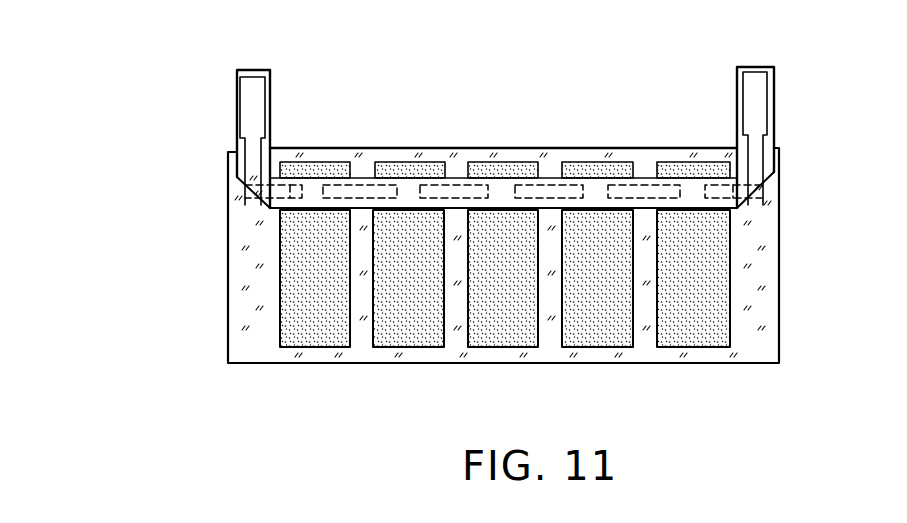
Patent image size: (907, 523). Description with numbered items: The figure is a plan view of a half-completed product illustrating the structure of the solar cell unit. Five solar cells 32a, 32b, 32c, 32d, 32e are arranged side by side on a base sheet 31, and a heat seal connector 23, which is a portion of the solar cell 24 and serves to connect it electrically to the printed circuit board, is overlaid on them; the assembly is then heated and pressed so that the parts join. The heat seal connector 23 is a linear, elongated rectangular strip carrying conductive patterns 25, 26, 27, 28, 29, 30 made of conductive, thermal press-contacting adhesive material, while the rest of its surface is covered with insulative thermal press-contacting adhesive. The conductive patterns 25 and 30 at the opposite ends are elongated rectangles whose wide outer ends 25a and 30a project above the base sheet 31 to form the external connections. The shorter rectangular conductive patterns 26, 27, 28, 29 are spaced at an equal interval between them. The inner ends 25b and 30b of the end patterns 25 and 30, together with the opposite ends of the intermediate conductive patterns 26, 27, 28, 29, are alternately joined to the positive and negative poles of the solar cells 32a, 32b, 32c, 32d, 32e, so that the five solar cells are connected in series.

The heat seal connector 23 is at (503, 187).
The solar cell 24 is at (783, 212).
The conductive pattern 25 is at (246, 132).
The wide outer end 25a is at (252, 87).
The inner end 25b is at (290, 185).
The conductive pattern 26 is at (360, 190).
The conductive pattern 27 is at (455, 183).
The conductive pattern 28 is at (552, 185).
The conductive pattern 29 is at (643, 187).
The conductive pattern 30 is at (762, 120).
The wide outer end 30a is at (753, 85).
The inner end 30b is at (715, 190).
The base sheet 31 is at (768, 285).
The solar cell 32a is at (323, 340).
The solar cell 32b is at (410, 340).
The solar cell 32c is at (497, 340).
The solar cell 32d is at (595, 340).
The solar cell 32e is at (688, 340).